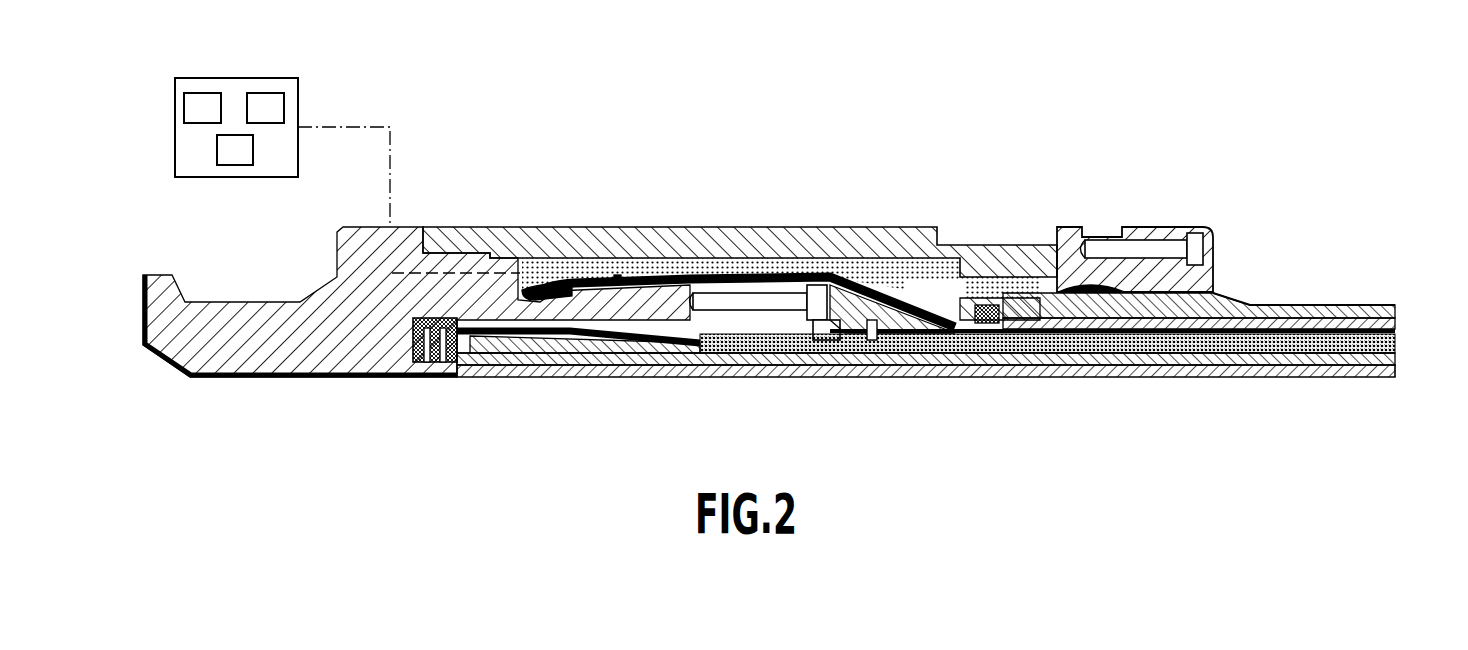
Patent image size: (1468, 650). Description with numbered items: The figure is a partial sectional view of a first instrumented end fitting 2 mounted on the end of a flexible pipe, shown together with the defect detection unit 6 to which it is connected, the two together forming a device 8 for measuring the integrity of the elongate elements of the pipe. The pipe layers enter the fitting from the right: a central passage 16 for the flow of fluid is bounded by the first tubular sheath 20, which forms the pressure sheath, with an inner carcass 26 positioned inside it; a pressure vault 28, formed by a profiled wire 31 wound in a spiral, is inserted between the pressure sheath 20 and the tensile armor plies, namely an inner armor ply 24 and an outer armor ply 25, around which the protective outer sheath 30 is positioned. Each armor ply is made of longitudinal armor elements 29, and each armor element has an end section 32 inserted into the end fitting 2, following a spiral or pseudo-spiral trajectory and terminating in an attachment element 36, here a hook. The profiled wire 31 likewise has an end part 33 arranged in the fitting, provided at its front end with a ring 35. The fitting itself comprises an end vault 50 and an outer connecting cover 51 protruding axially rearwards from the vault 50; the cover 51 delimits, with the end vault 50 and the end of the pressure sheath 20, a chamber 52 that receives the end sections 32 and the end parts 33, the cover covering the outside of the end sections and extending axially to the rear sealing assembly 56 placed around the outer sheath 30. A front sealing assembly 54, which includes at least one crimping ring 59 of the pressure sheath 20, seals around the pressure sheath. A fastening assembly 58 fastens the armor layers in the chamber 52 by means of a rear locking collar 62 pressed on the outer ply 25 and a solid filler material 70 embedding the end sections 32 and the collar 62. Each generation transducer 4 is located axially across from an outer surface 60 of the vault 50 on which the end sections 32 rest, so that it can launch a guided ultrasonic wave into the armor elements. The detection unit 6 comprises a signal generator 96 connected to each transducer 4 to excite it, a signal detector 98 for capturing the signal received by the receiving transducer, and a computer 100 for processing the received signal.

The instrumented end fitting 2 is at (661, 122).
The transducer 4 is at (555, 283).
The defect detection unit 6 is at (309, 151).
The device for measuring integrity 8 is at (300, 151).
The central passage 16 is at (926, 394).
The first tubular sheath 20 is at (1395, 358).
The inner armor ply 24 is at (1395, 337).
The outer armor ply 25 is at (1395, 305).
The inner carcass 26 is at (1365, 378).
The pressure vault 28 is at (1395, 344).
The armor elements 29 is at (1138, 353).
The outer sheath 30 is at (1363, 303).
The profiled wire 31 is at (962, 333).
The end section 32 is at (781, 224).
The end part 33 is at (880, 352).
The ring 35 is at (818, 352).
The attachment element 36 is at (517, 258).
The end vault 50 is at (316, 390).
The outer connecting cover 51 is at (934, 186).
The chamber 52 is at (935, 287).
The front sealing assembly 54 is at (621, 368).
The rear sealing assembly 56 is at (1243, 254).
The fastening assembly 58 is at (860, 273).
The crimping ring 59 is at (582, 345).
The outer surface 60 is at (565, 285).
The rear locking collar 62 is at (992, 300).
The solid filler material 70 is at (970, 283).
The signal generator 96 is at (203, 92).
The signal detector 98 is at (267, 92).
The computer 100 is at (235, 166).